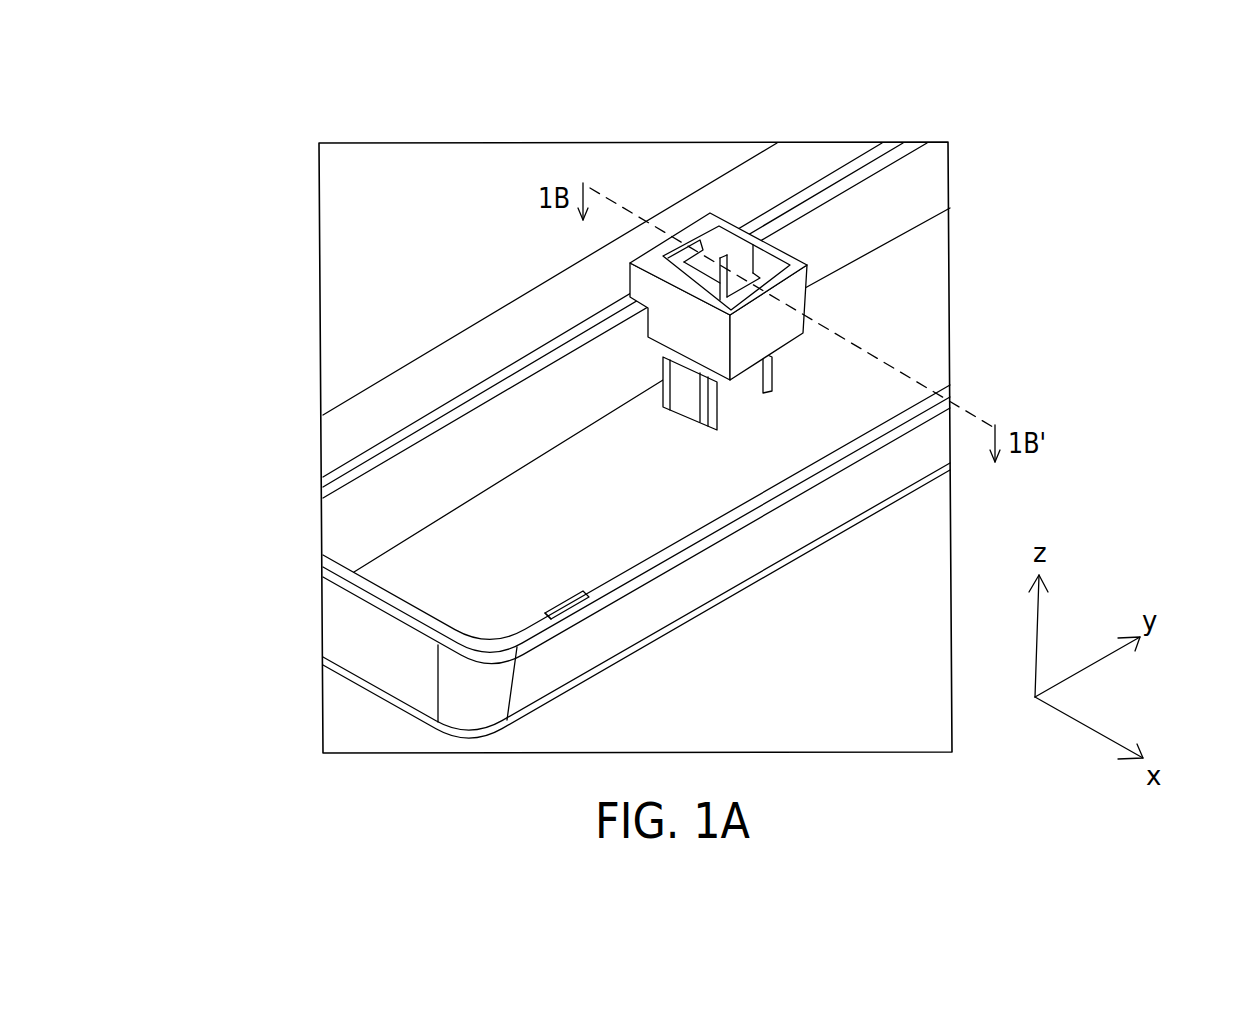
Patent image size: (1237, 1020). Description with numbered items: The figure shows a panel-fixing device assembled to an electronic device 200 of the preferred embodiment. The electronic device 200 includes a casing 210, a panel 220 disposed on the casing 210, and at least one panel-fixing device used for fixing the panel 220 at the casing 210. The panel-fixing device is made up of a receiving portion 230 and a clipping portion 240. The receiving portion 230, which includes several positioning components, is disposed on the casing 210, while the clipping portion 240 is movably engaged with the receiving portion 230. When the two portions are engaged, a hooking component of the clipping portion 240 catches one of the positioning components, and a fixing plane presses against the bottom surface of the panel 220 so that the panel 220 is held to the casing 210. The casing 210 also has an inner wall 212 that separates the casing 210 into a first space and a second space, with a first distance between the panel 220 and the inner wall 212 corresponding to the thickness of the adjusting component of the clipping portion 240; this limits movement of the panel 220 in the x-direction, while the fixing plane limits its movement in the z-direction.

The electronic device 200 is at (276, 83).
The casing 210 is at (912, 452).
The inner wall 212 is at (703, 277).
The panel 220 is at (810, 162).
The receiving portion 230 is at (720, 405).
The clipping portion 240 is at (819, 267).